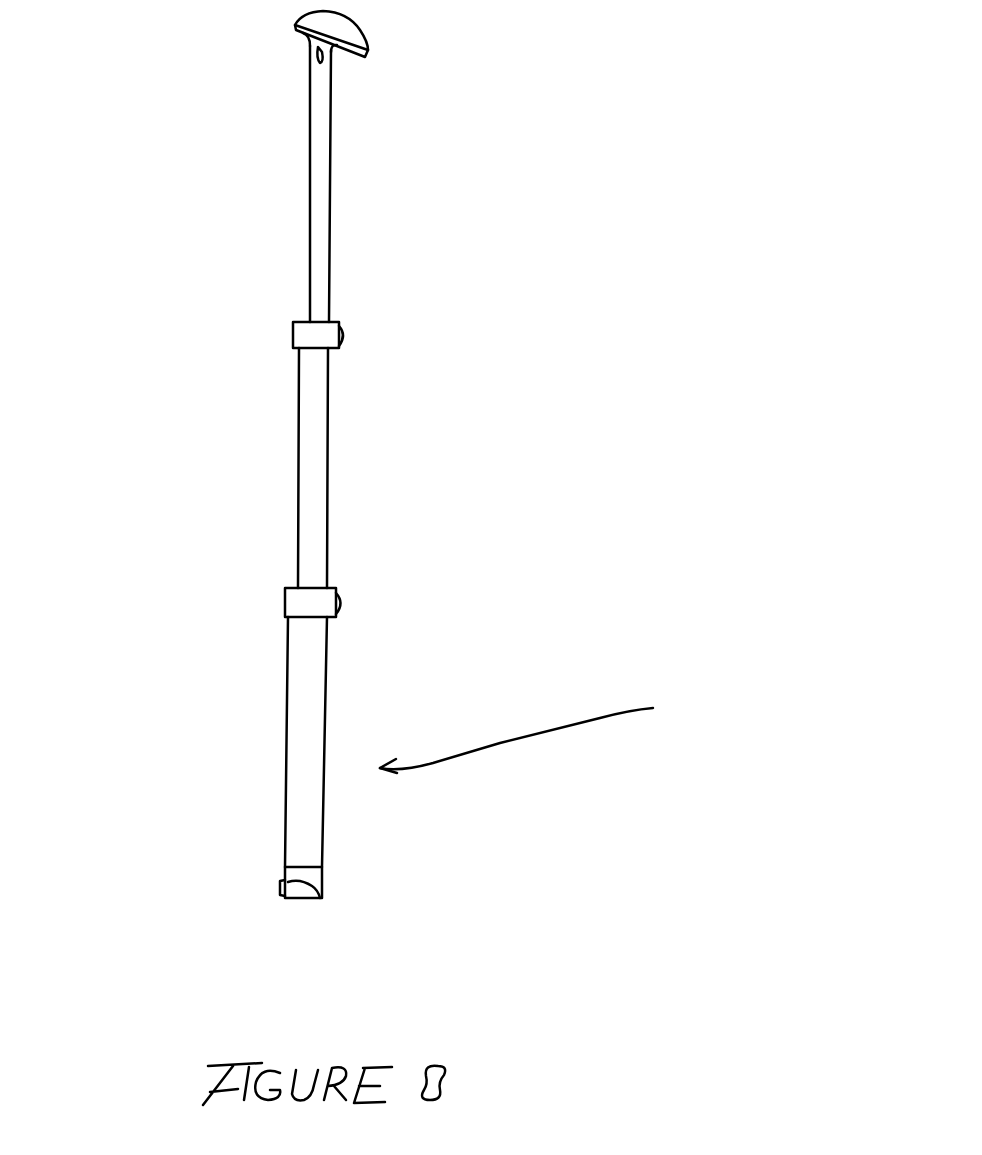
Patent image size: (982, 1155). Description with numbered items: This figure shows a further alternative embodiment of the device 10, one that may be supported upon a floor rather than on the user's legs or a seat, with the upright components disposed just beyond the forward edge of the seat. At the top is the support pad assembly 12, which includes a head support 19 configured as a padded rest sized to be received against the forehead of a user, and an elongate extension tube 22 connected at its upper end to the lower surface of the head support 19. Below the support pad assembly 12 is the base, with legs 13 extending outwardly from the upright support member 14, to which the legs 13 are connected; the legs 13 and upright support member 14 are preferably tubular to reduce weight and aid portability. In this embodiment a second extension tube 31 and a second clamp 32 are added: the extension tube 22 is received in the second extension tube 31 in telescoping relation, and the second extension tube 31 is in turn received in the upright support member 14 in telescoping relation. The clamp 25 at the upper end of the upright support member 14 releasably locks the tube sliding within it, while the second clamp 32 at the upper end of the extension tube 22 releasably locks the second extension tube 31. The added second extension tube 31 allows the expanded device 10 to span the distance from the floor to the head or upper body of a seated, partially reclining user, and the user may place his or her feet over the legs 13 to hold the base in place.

The device 10 is at (532, 468).
The support pad assembly 12 is at (378, 160).
The legs 13 is at (307, 890).
The upright support member 14 is at (308, 465).
The head support 19 is at (295, 25).
The extension tube 22 is at (318, 189).
The clamp 25 is at (310, 331).
The second extension tube 31 is at (313, 700).
The second clamp 32 is at (293, 606).